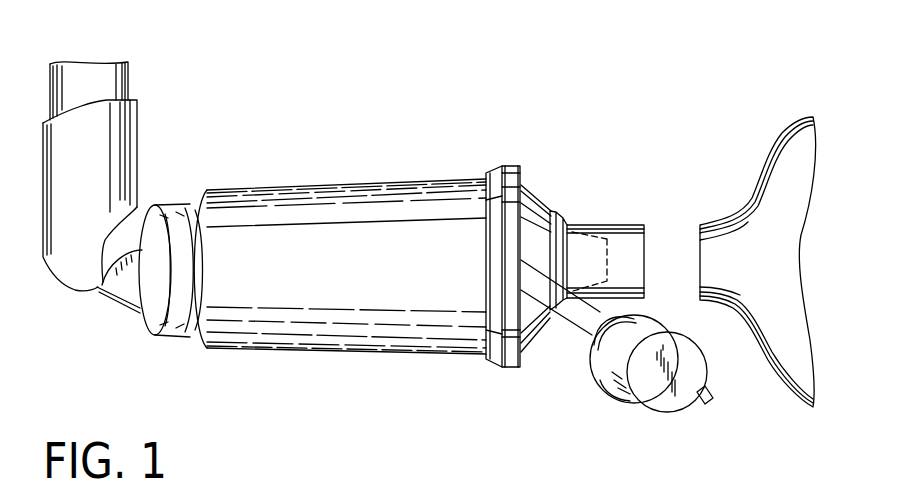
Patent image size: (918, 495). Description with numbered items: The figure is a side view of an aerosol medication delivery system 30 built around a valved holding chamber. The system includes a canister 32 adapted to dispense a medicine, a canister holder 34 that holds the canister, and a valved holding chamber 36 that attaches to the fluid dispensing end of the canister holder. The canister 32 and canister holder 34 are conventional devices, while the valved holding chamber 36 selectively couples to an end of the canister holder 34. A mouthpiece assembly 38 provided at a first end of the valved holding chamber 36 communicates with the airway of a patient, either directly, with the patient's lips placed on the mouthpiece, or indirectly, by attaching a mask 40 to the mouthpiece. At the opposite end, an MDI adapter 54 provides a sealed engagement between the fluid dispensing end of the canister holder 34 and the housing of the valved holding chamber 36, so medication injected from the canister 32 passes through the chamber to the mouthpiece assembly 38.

The aerosol medication delivery system 30 is at (397, 108).
The canister 32 is at (118, 83).
The canister holder 34 is at (118, 163).
The valved holding chamber 36 is at (257, 165).
The mouthpiece assembly 38 is at (547, 163).
The mask 40 is at (757, 207).
The MDI adapter 54 is at (157, 308).